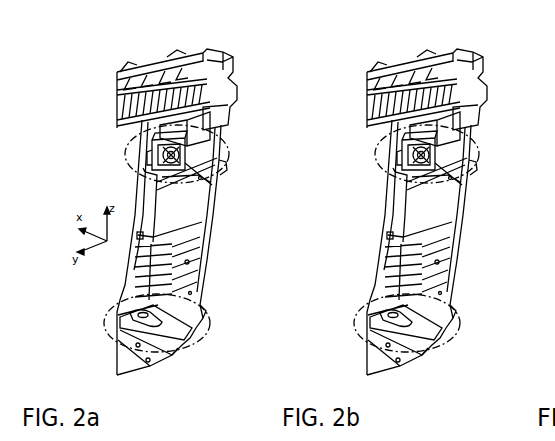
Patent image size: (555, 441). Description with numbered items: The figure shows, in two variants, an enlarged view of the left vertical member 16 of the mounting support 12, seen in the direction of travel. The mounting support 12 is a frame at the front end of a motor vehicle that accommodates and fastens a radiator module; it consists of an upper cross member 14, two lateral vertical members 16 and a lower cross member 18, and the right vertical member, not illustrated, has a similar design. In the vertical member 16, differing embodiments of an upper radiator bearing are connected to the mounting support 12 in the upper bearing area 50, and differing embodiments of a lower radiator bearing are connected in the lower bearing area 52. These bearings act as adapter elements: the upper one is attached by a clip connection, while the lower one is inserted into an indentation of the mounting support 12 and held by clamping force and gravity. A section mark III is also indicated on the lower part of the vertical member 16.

In FIG. 2A, the mounting support 12 is at (203, 40).
In FIG. 2B, the mounting support 12 is at (448, 76).
In FIG. 2A, the upper cross member 14 is at (153, 90).
In FIG. 2B, the upper cross member 14 is at (413, 80).
In FIG. 2A, the vertical member 16 is at (192, 220).
In FIG. 2B, the vertical member 16 is at (428, 247).
In FIG. 2A, the lower cross member 18 is at (125, 358).
In FIG. 2B, the lower cross member 18 is at (381, 352).
In FIG. 2A, the upper bearing area 50 is at (223, 169).
In FIG. 2B, the upper bearing area 50 is at (485, 175).
In FIG. 2A, the lower bearing area 52 is at (207, 320).
In FIG. 2B, the lower bearing area 52 is at (468, 314).
In FIG. 2A, the section indicator III is at (188, 345).